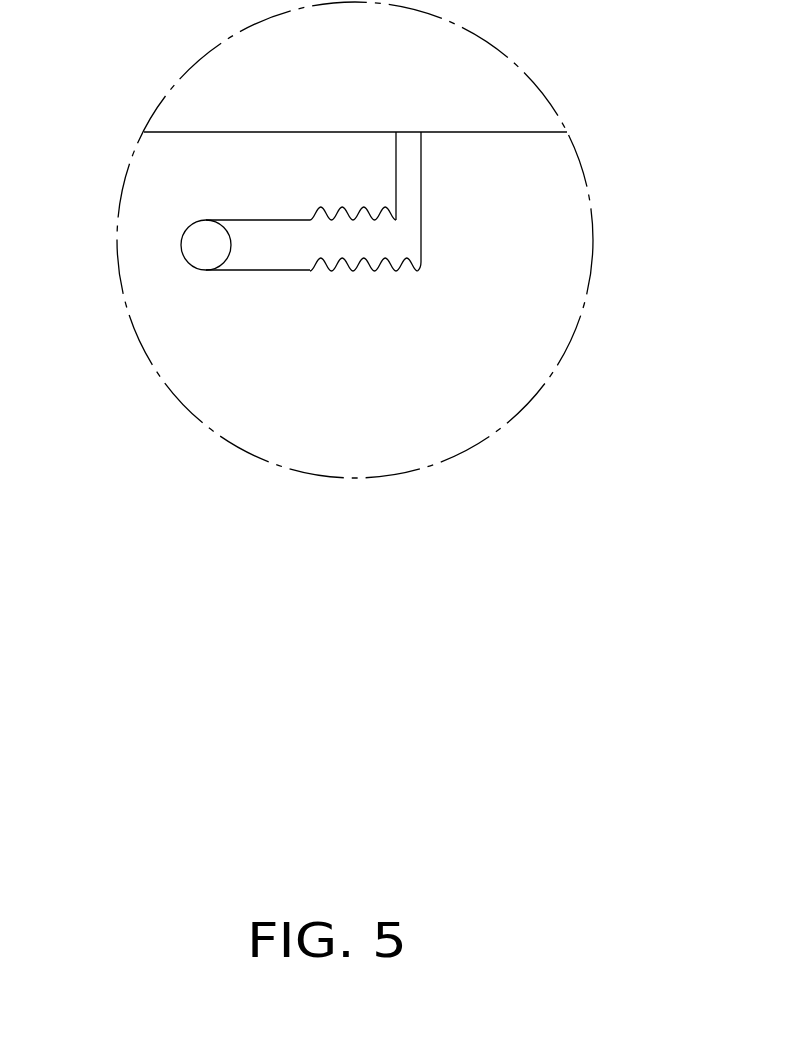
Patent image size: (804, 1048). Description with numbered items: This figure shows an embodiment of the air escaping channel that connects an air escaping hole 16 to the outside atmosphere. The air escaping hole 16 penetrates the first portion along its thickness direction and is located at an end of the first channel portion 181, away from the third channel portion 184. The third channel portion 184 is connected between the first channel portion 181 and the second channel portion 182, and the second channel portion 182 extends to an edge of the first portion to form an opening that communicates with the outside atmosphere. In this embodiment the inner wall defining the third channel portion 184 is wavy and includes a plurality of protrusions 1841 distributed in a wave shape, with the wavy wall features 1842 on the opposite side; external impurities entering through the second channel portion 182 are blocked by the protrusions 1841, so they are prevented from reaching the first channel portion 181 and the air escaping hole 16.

The air escaping hole 16 is at (198, 241).
The first channel portion 181 is at (263, 254).
The second channel portion 182 is at (412, 173).
The third channel portion 184 is at (378, 292).
The protrusions 1841 is at (388, 263).
The upper thread 1842 is at (348, 222).